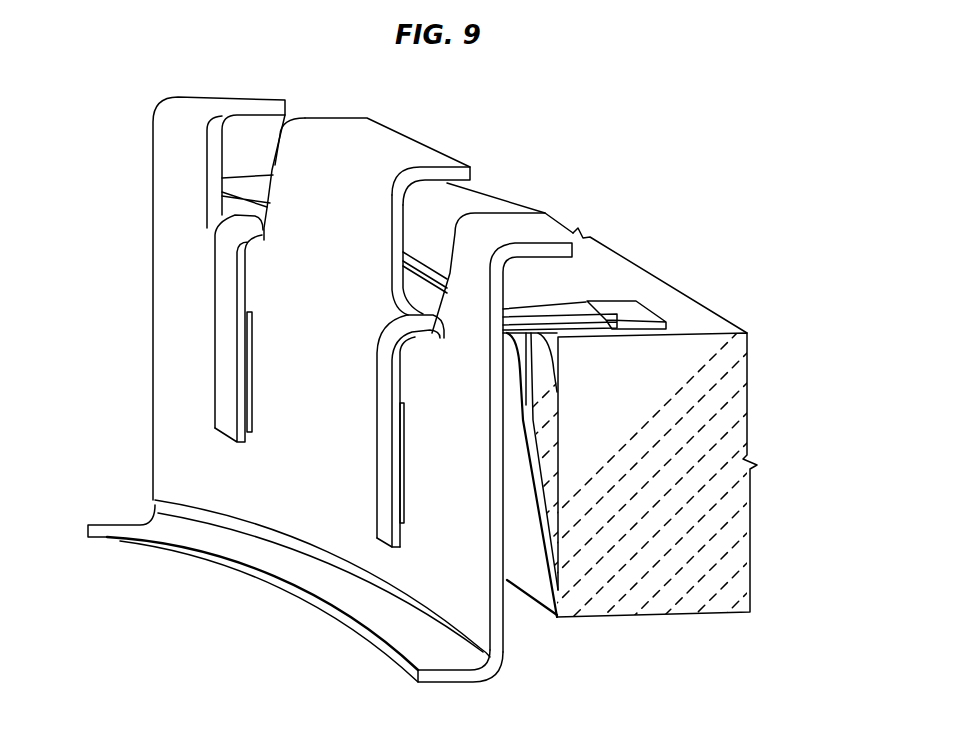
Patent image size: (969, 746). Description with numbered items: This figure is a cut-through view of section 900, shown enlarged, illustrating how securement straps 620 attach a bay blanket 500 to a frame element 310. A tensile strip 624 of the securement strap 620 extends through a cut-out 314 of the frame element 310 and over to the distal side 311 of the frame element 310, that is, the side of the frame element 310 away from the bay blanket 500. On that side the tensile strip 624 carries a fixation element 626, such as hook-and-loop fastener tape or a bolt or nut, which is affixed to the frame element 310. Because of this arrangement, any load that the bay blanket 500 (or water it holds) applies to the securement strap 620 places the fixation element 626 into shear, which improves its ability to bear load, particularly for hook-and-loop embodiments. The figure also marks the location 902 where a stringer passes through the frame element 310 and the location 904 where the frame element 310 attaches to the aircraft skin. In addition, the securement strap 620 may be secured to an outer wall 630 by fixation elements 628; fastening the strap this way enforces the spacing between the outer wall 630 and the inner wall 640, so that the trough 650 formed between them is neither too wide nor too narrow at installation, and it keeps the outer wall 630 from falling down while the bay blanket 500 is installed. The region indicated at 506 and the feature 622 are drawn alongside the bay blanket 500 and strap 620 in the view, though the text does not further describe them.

The section 900 is at (790, 679).
The frame element 310 is at (137, 529).
The distal side 311 is at (388, 561).
The securement strap 620 is at (617, 123).
The location 904 is at (402, 150).
The cut-out 314 is at (394, 222).
The trough 650 is at (434, 260).
The location 902 is at (405, 287).
The tensile strip 624 is at (227, 344).
The fixation element 626 is at (293, 382).
The fixation elements 628 is at (513, 358).
The inner wall 640 is at (548, 422).
The outer wall 630 is at (524, 553).
The terminal pad 622 is at (641, 313).
The battery cell 506 is at (740, 382).
The bay blanket 500 is at (690, 488).